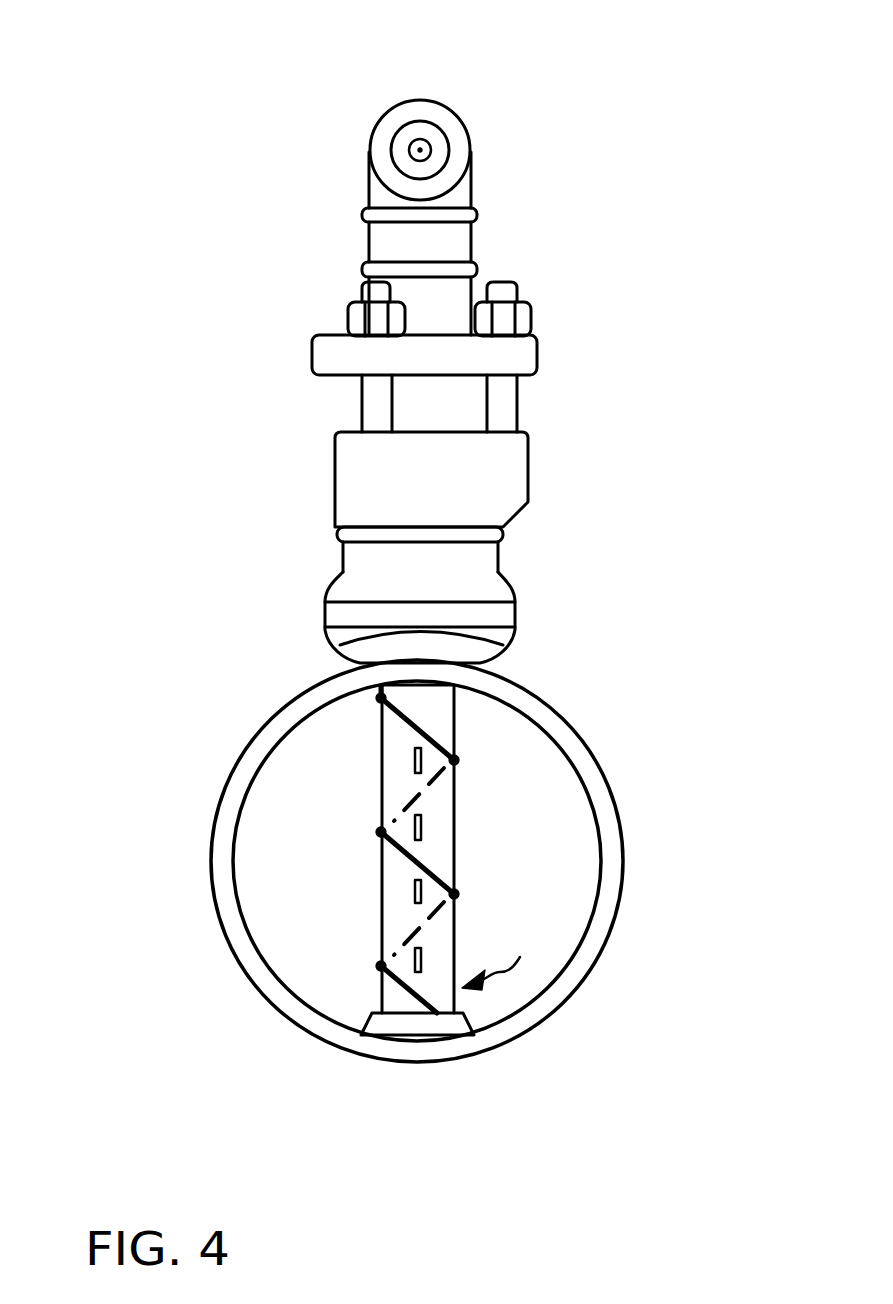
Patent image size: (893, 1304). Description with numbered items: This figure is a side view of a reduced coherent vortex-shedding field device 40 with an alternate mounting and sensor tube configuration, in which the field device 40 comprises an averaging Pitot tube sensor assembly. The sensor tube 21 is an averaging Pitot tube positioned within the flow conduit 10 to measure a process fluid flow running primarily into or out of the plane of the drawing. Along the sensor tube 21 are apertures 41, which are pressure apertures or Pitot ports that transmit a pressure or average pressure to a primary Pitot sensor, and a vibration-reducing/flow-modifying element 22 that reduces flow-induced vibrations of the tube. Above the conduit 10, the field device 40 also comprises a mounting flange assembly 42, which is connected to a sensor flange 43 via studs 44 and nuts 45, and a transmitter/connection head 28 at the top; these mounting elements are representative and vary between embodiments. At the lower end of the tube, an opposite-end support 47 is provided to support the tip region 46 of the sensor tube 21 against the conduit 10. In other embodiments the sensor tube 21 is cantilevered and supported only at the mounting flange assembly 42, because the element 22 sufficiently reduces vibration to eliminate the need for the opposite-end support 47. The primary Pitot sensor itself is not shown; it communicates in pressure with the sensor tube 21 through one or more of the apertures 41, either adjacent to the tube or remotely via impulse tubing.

The field device 40 is at (150, 84).
The transmitter/connection head 28 is at (463, 123).
The nuts 45 is at (532, 312).
The sensor flange 43 is at (312, 356).
The studs 44 is at (520, 408).
The mounting flange assembly 42 is at (335, 492).
The flow conduit 10 is at (590, 738).
The sensor tube 21 is at (397, 755).
The vibration-reducing/flow-modifying element 22 is at (455, 894).
The apertures 41 is at (417, 893).
The tip region 46 is at (503, 953).
The opposite-end support 47 is at (400, 1023).